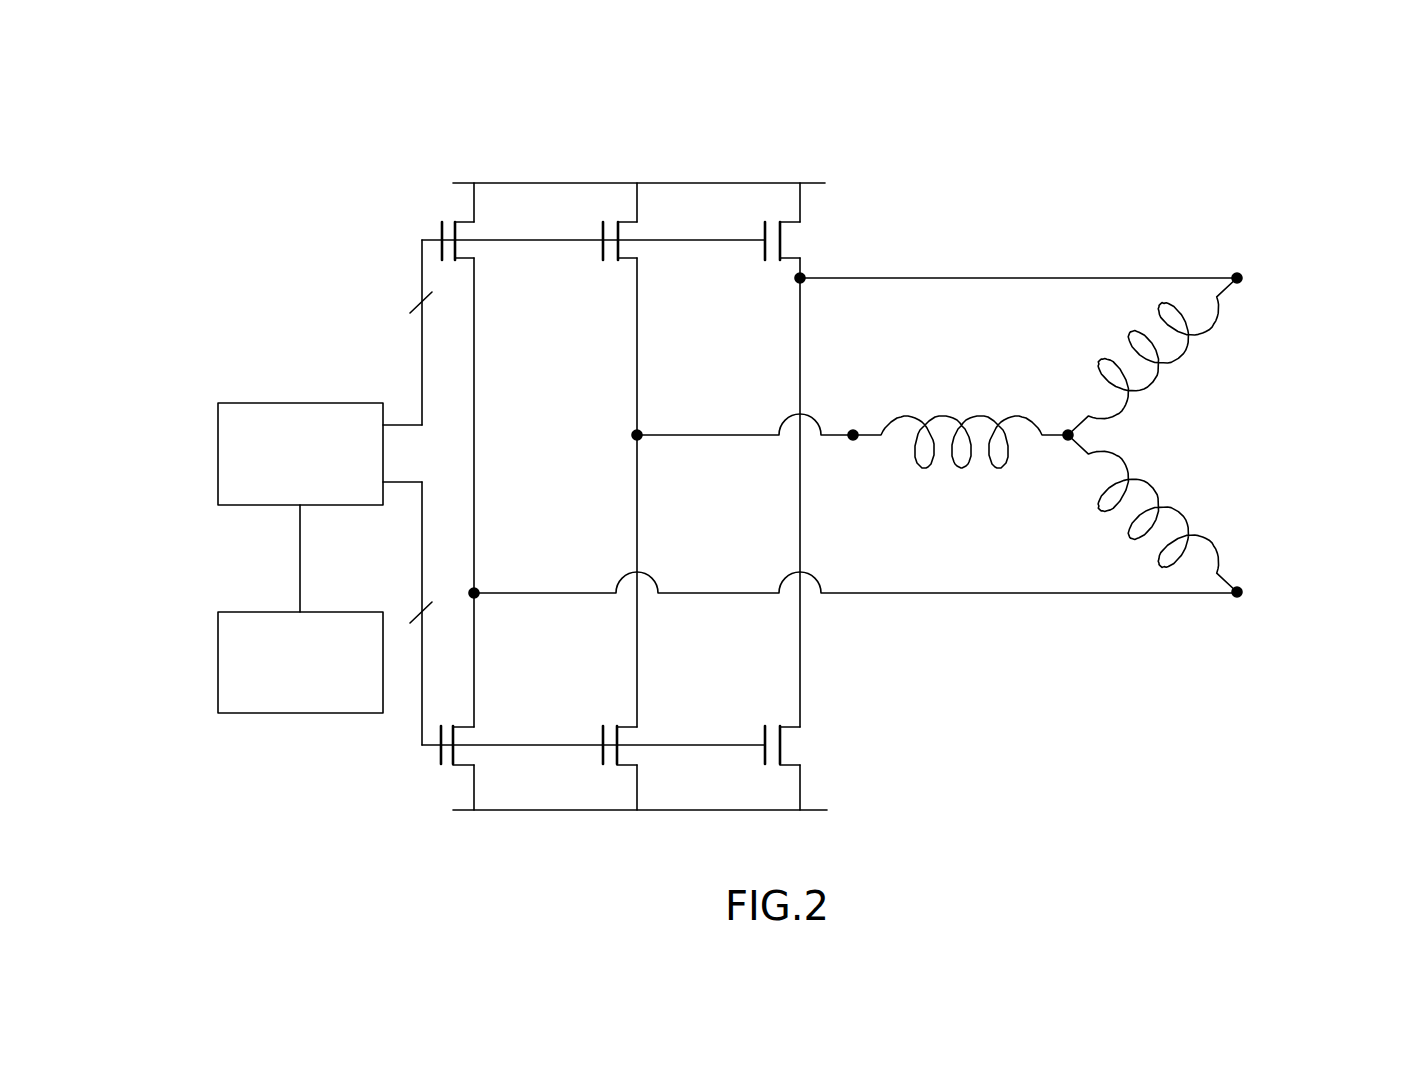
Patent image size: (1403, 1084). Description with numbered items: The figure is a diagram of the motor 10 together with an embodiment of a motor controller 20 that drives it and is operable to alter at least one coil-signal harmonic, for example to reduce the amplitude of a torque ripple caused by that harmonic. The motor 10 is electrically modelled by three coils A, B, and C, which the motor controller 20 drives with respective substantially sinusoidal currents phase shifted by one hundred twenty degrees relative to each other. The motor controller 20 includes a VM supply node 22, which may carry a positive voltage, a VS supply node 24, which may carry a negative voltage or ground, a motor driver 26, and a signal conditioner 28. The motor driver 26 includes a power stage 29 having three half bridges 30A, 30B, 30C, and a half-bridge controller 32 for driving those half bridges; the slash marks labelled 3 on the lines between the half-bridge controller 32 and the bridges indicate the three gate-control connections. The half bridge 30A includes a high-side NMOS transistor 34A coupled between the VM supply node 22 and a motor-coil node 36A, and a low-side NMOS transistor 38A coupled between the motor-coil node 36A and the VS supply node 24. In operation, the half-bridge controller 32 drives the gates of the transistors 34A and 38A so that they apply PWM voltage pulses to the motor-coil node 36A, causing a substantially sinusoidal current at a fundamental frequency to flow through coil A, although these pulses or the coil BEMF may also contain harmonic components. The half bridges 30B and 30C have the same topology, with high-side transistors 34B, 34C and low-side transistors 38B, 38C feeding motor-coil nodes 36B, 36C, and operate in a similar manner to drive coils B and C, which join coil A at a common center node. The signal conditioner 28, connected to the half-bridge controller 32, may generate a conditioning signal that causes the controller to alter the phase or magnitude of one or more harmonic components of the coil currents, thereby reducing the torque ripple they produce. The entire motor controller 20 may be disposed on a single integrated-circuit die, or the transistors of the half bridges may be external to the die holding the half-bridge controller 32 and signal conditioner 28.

The motor 10 is at (1239, 454).
The motor controller 20 is at (870, 821).
The VM supply node 22 is at (825, 183).
The VS supply node 24 is at (635, 795).
The motor driver 26 is at (356, 212).
The signal conditioner 28 is at (306, 713).
The power stage 29 is at (713, 142).
The half bridge 30A is at (502, 318).
The half bridge 30B is at (656, 318).
The half bridge 30C is at (832, 344).
The half-bridge controller 32 is at (281, 403).
The high-side NMOS transistor 34A is at (475, 222).
The high-side NMOS transistor 34B is at (638, 222).
The high-side NMOS transistor 34C is at (801, 222).
The motor-coil node 36A is at (866, 608).
The motor-coil node 36B is at (853, 440).
The motor-coil node 36C is at (1036, 262).
The low-side NMOS transistor 38A is at (474, 727).
The low-side NMOS transistor 38B is at (637, 722).
The low-side NMOS transistor 38C is at (801, 727).
The three-line bus indicator 3 is at (428, 459).